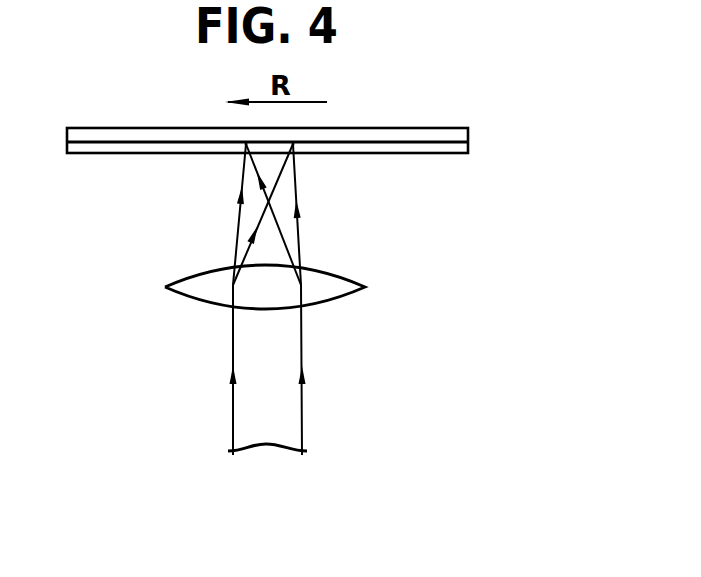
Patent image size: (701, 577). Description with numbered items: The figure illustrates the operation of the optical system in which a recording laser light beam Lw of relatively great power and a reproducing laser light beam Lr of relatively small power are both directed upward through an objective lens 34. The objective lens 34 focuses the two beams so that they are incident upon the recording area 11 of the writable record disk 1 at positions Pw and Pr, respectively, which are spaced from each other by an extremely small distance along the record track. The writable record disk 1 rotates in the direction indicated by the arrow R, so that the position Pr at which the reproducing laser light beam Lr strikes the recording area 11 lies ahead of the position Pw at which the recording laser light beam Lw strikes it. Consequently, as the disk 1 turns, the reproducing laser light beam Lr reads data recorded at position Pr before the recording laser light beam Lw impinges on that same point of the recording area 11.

The writable record disk 1 is at (427, 129).
The recording area 11 is at (112, 145).
The objective lens 34 is at (342, 298).
The recording laser light beam Lw is at (252, 210).
The reproducing laser light beam Lr is at (288, 221).
The position of incidence of recording laser light beam Pw is at (245, 152).
The position of incidence of reproducing laser light beam Pr is at (297, 153).